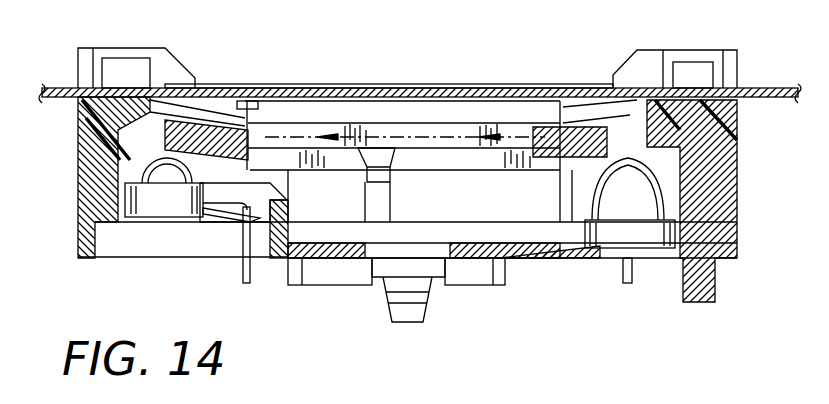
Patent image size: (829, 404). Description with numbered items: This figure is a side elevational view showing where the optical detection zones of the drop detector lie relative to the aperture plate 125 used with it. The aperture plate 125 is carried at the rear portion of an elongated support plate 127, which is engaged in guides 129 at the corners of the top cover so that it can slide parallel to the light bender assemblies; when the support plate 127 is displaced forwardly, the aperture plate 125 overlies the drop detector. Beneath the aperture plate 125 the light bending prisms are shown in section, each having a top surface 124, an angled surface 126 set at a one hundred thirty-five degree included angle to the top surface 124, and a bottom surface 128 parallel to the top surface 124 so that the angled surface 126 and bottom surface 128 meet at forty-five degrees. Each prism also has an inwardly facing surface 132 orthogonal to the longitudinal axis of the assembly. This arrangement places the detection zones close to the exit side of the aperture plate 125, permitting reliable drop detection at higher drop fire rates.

The top surface 124 is at (200, 126).
The aperture plate 125 is at (253, 84).
The angled surface 126 is at (100, 126).
The support plate 127 is at (55, 85).
The bottom surface 128 is at (100, 161).
The guides 129 is at (150, 29).
The inwardly facing surface 132 is at (267, 118).